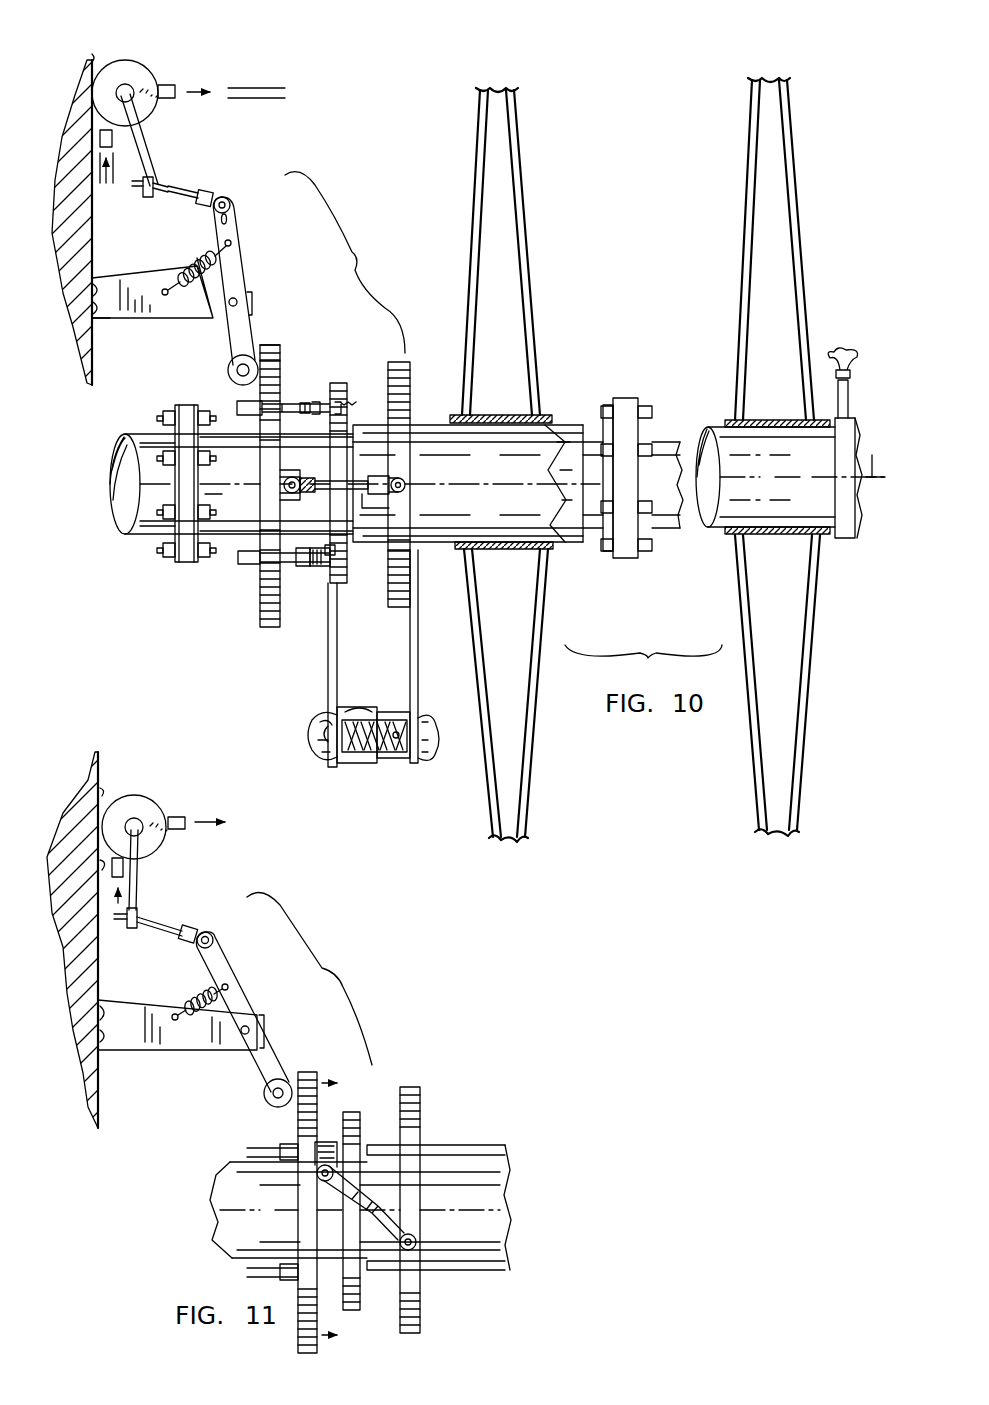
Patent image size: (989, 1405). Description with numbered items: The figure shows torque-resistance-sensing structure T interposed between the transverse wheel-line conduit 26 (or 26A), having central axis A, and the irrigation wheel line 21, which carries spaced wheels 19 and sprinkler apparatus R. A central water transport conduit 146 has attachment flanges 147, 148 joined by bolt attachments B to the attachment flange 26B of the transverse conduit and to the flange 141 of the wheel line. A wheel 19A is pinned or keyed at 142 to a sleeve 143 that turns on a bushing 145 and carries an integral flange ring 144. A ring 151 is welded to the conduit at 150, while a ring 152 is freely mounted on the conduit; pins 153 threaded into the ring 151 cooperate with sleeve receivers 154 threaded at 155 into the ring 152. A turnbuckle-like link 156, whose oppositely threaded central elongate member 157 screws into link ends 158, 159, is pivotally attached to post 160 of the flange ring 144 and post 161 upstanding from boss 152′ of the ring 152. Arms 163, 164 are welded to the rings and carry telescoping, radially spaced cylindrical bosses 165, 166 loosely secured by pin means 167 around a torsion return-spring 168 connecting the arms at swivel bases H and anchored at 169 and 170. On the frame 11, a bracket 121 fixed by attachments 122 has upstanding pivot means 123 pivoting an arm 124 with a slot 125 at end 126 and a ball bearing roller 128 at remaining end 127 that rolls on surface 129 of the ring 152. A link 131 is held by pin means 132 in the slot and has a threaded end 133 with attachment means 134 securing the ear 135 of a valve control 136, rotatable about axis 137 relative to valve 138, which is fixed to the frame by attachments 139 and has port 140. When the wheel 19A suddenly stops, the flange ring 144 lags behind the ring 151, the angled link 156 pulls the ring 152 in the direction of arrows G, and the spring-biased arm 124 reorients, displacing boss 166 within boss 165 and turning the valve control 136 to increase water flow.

In FIG. 10, the frame 11 is at (78, 332).
In FIG. 11, the frame 11 is at (104, 760).
In FIG. 10, the wheels 19 is at (812, 312).
In FIG. 10, the wheel 19A is at (532, 258).
In FIG. 10, the irrigation wheel line 21 is at (735, 450).
In FIG. 10, the transverse wheel-line conduit 26 is at (148, 520).
In FIG. 10, the transverse conduit 26A is at (157, 484).
In FIG. 10, the attachment flange 26B is at (185, 565).
In FIG. 10, the bracket 121 is at (138, 285).
In FIG. 11, the bracket 121 is at (130, 1010).
In FIG. 10, the attachments 122 is at (105, 318).
In FIG. 10, the pivot means 123 is at (240, 298).
In FIG. 10, the arm 124 is at (244, 262).
In FIG. 11, the arm 124 is at (262, 1052).
In FIG. 10, the slot 125 is at (230, 220).
In FIG. 10, the end 126 is at (232, 207).
In FIG. 10, the remaining end 127 is at (230, 366).
In FIG. 10, the ball bearing roller 128 is at (262, 347).
In FIG. 10, the surface 129 is at (280, 380).
In FIG. 10, the link 131 is at (185, 190).
In FIG. 10, the pin means 132 is at (226, 198).
In FIG. 10, the threaded end 133 is at (137, 190).
In FIG. 10, the attachment means 134 is at (150, 197).
In FIG. 10, the ear 135 is at (158, 180).
In FIG. 11, the ear 135 is at (140, 918).
In FIG. 10, the valve control 136 is at (150, 148).
In FIG. 11, the valve control 136 is at (140, 878).
In FIG. 10, the axis 137 is at (133, 90).
In FIG. 10, the valve 138 is at (130, 75).
In FIG. 11, the valve 138 is at (140, 800).
In FIG. 10, the attachments 139 is at (92, 62).
In FIG. 10, the port 140 is at (100, 138).
In FIG. 10, the flange 141 is at (178, 86).
In FIG. 10, the pin or key 142 is at (490, 418).
In FIG. 10, the sleeve 143 is at (572, 545).
In FIG. 11, the sleeve 143 is at (465, 1160).
In FIG. 10, the flange ring 144 is at (405, 605).
In FIG. 11, the flange ring 144 is at (410, 1103).
In FIG. 10, the bushing 145 is at (606, 560).
In FIG. 10, the conduit 146 is at (250, 440).
In FIG. 11, the conduit 146 is at (245, 1208).
In FIG. 10, the attachment flange 147 is at (628, 560).
In FIG. 10, the attachment flange 148 is at (190, 562).
In FIG. 10, the weld 150 is at (330, 508).
In FIG. 10, the ring 151 is at (340, 590).
In FIG. 11, the ring 151 is at (350, 1115).
In FIG. 10, the ring 152 is at (264, 628).
In FIG. 11, the ring 152 is at (310, 1072).
In FIG. 10, the boss 152′ is at (263, 470).
In FIG. 10, the pins 153 is at (240, 406).
In FIG. 10, the sleeve receivers 154 is at (300, 568).
In FIG. 10, the threaded connection 155 is at (265, 565).
In FIG. 10, the link 156 is at (352, 472).
In FIG. 11, the link 156 is at (375, 1215).
In FIG. 10, the central elongate member 157 is at (405, 508).
In FIG. 10, the link end 158 is at (405, 468).
In FIG. 10, the link end 159 is at (292, 476).
In FIG. 10, the post 160 is at (406, 485).
In FIG. 10, the post 161 is at (285, 488).
In FIG. 10, the arm 163 is at (337, 673).
In FIG. 10, the arm 164 is at (418, 650).
In FIG. 10, the cylindrical boss 165 is at (350, 710).
In FIG. 10, the cylindrical boss 166 is at (418, 708).
In FIG. 10, the pin means 167 is at (432, 740).
In FIG. 10, the torsion return-spring 168 is at (214, 306).
In FIG. 11, the torsion return-spring 168 is at (205, 1000).
In FIG. 11, the anchor 169 is at (178, 1022).
In FIG. 11, the anchor 170 is at (230, 985).
In FIG. 10, the central axis A is at (875, 452).
In FIG. 10, the bolt attachments B is at (219, 490).
In FIG. 11, the arrows G is at (329, 1209).
In FIG. 10, the swivel bases H is at (314, 755).
In FIG. 10, the sprinkler apparatus R is at (852, 540).
In FIG. 10, the torque-resistance-sensing structure T is at (345, 262).
In FIG. 11, the torque-resistance-sensing structure T is at (309, 979).